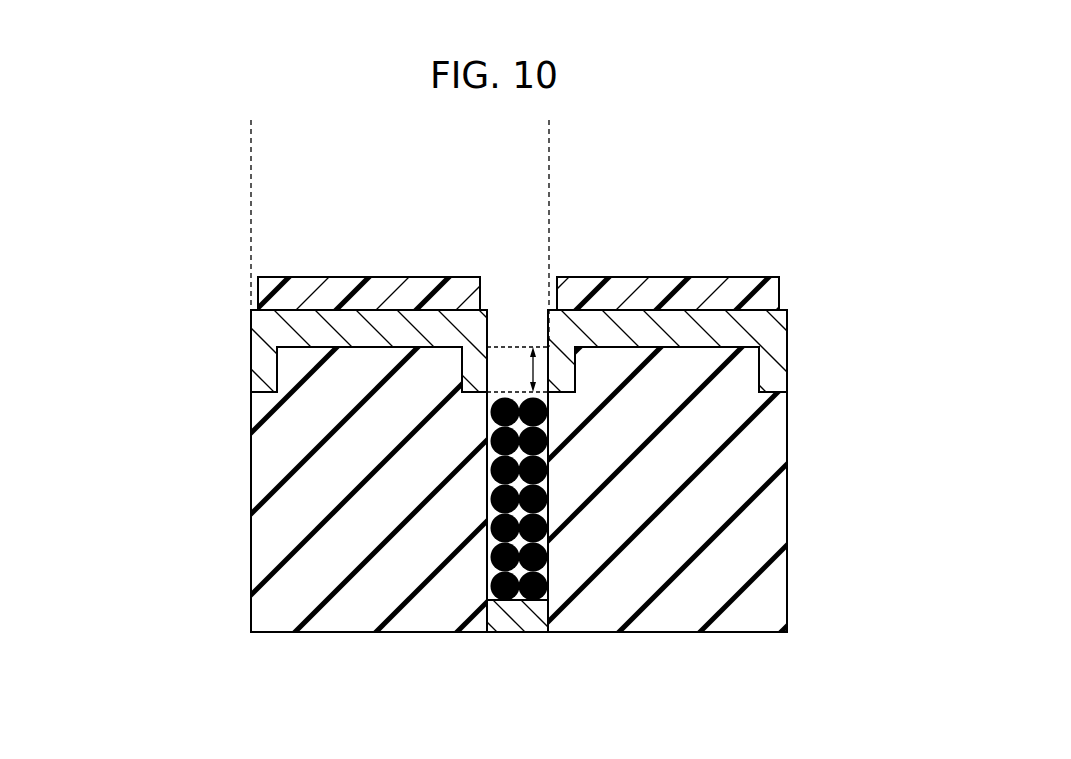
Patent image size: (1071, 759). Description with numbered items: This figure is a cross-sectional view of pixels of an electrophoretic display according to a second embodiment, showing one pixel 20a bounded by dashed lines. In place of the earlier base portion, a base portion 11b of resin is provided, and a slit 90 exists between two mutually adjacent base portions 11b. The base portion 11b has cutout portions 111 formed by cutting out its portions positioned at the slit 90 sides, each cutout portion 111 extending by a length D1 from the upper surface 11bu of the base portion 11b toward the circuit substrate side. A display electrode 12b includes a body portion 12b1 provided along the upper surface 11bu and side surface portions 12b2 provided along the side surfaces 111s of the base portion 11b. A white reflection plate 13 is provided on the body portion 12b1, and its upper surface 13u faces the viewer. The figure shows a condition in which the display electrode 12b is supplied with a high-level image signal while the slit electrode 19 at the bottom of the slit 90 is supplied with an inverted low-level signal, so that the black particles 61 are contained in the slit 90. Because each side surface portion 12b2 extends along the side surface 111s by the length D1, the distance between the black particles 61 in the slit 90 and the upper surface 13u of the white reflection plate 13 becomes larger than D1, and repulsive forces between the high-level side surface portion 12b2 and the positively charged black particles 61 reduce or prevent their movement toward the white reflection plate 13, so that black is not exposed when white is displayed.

The pixel 20a is at (538, 143).
The white reflection plate 13 is at (262, 291).
The upper surface of the white reflection plate 13u is at (298, 277).
The upper surface of the base portion 11bu is at (283, 343).
The display electrode 12b is at (481, 213).
The body portion 12b1 is at (390, 325).
The side surface portion 12b2 is at (472, 352).
The base portion 11b is at (272, 468).
The cutout portion 111 is at (484, 364).
The side surface of the base portion 111s is at (483, 364).
The slit 90 is at (535, 332).
The slit electrode 19 is at (507, 632).
The black particles 61 is at (543, 587).